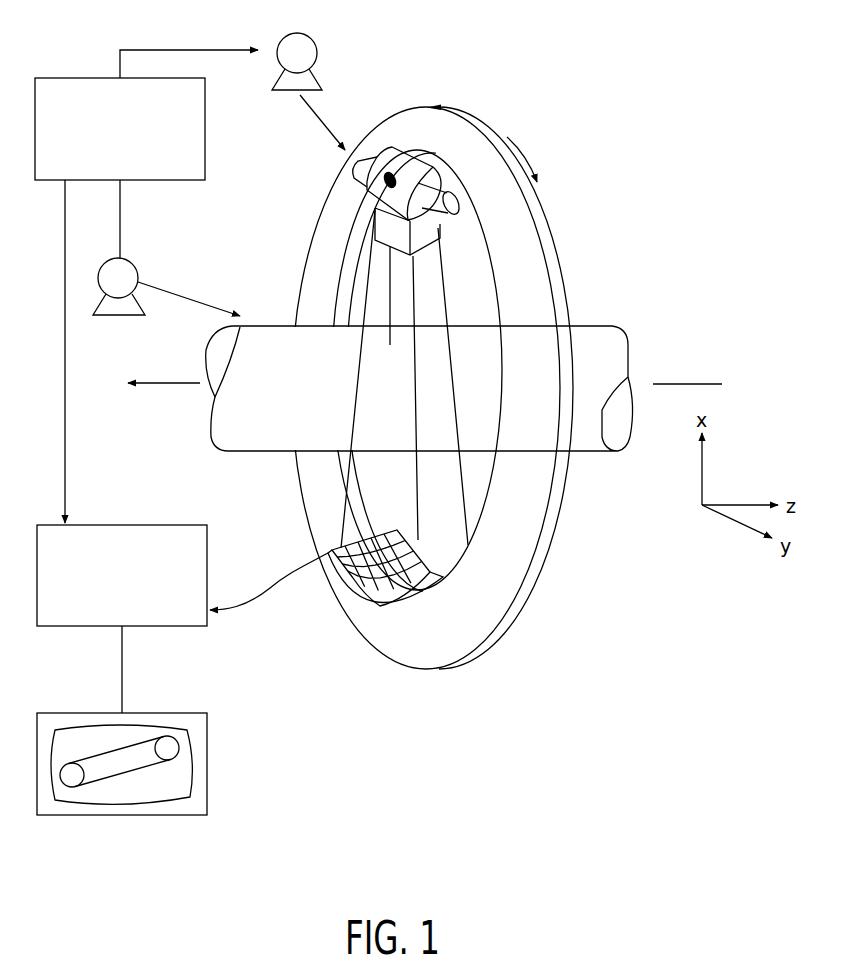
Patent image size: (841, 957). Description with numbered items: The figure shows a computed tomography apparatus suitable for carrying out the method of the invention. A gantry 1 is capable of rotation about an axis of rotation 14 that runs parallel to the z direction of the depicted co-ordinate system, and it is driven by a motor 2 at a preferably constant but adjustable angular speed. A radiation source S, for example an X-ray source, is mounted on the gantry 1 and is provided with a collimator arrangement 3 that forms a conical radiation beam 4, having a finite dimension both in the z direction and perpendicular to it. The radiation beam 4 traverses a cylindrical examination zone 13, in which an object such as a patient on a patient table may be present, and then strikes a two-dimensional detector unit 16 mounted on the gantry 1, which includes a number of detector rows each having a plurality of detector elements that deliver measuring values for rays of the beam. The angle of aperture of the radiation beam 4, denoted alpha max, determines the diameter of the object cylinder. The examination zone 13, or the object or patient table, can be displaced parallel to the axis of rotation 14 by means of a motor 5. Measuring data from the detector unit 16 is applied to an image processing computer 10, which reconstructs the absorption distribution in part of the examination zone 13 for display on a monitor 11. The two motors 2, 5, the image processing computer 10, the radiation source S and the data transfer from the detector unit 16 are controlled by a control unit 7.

The gantry 1 is at (530, 517).
The motor 2 is at (316, 53).
The collimator arrangement 3 is at (440, 236).
The radiation beam 4 is at (419, 468).
The motor 5 is at (133, 263).
The control unit 7 is at (80, 78).
The image processing computer 10 is at (82, 614).
The monitor 11 is at (210, 790).
The examination zone 13 is at (270, 347).
The axis of rotation 14 is at (168, 382).
The detector unit 16 is at (355, 595).
The radiation source S is at (415, 167).